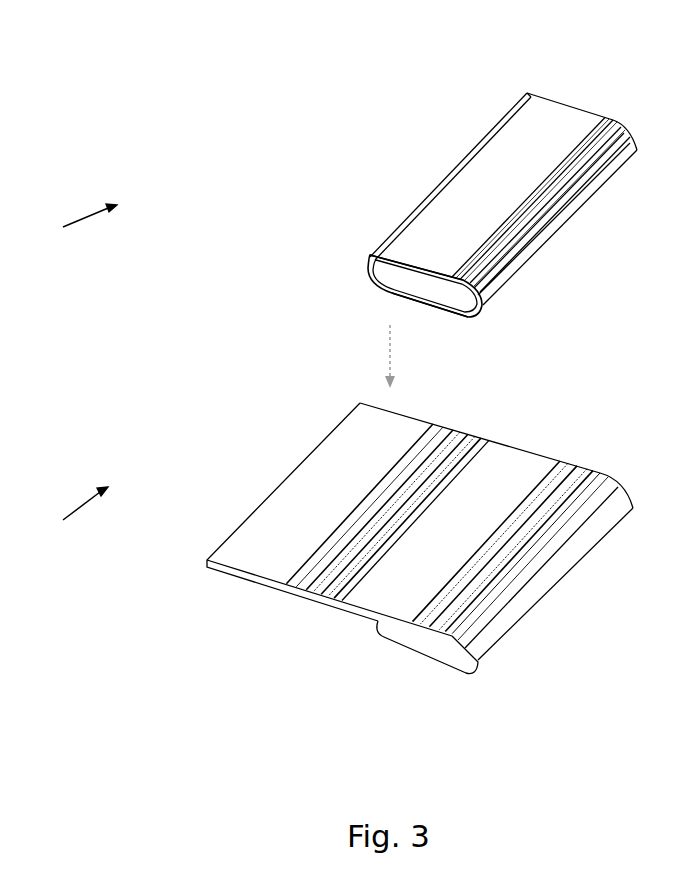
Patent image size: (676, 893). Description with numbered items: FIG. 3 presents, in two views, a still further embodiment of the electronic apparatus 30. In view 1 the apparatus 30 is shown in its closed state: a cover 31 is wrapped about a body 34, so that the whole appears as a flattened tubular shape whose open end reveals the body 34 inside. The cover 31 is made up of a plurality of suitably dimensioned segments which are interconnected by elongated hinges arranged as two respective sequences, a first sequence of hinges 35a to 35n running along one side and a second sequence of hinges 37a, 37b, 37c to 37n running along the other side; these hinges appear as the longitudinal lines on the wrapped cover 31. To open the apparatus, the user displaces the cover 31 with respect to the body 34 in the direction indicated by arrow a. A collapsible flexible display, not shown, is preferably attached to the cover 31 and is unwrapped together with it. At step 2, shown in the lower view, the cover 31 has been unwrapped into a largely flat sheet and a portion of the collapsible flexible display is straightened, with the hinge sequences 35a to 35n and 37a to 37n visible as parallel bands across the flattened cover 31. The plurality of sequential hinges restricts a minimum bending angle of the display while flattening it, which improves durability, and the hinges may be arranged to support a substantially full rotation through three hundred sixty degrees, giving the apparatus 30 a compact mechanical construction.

The electronic apparatus 30 is at (78, 60).
The cover 31 is at (563, 118).
The body 34 is at (447, 300).
The elongated hinge 35a is at (380, 252).
The elongated hinge 35n is at (390, 295).
The elongated hinge 37a is at (500, 247).
The elongated hinge 37b is at (512, 260).
The elongated hinge 37c is at (500, 288).
The elongated hinge 37n is at (463, 315).
The arrow a is at (332, 53).
The view 1 is at (76, 223).
The step 2 is at (71, 513).